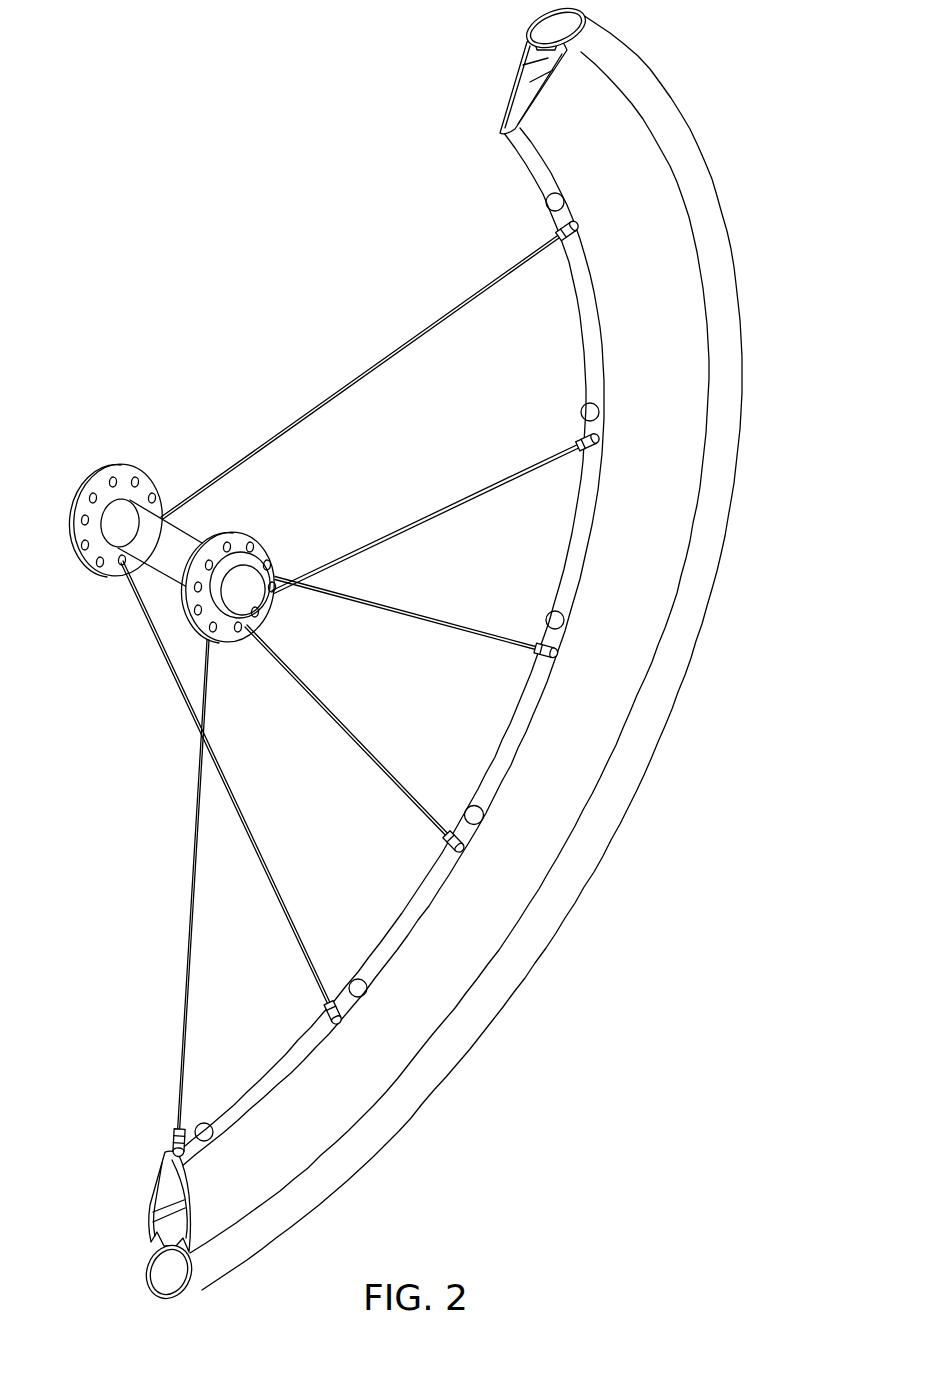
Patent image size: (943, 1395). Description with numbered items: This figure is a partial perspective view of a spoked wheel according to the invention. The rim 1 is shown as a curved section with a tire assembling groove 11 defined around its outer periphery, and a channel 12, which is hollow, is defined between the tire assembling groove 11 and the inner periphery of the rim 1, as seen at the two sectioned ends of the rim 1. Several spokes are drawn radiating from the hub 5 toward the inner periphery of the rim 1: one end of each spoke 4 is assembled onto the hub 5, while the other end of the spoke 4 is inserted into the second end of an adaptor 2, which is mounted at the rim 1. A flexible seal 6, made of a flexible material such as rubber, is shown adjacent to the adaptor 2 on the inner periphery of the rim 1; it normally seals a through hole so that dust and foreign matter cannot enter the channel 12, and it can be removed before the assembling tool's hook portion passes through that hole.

The rim 1 is at (473, 943).
The adaptor 2 is at (160, 1143).
The spoke 4 is at (193, 885).
The hub 5 is at (165, 567).
The flexible seal 6 is at (200, 1127).
The tire assembling groove 11 is at (168, 1250).
The channel 12 is at (167, 1187).